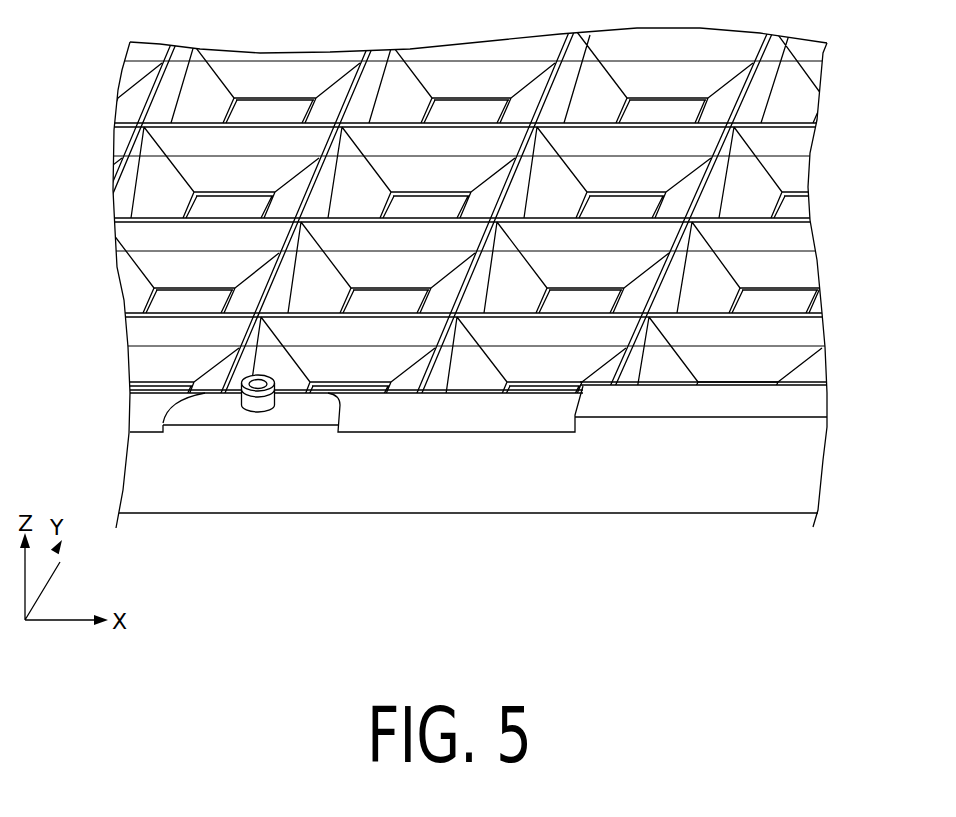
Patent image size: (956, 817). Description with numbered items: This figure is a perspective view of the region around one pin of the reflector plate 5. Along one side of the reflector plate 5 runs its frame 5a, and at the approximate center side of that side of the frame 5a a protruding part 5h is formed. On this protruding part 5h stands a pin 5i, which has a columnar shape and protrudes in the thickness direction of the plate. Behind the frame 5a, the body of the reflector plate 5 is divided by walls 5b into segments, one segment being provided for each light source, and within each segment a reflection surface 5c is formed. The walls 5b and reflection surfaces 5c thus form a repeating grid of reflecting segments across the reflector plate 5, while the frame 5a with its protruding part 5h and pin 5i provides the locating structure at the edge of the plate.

The reflector plate 5 is at (798, 465).
The frame 5a is at (148, 413).
The wall 5b is at (136, 144).
The reflection surface 5c is at (147, 170).
The protruding part 5h is at (218, 408).
The pin 5i is at (257, 403).